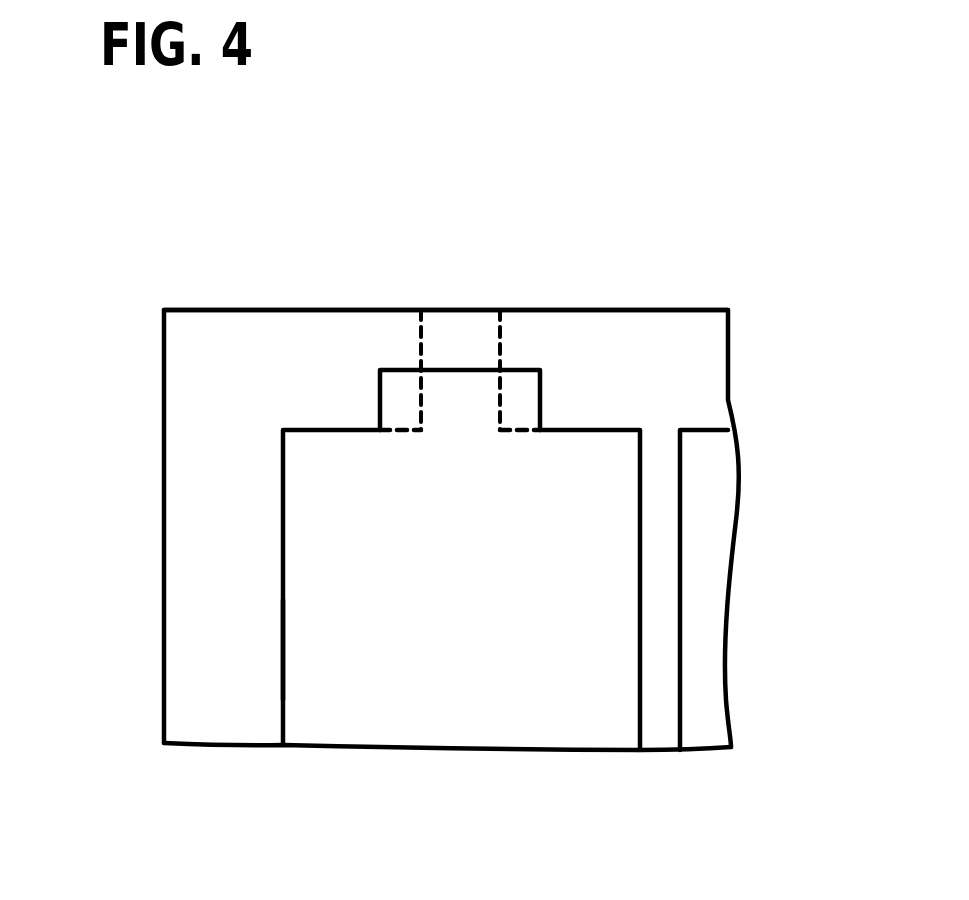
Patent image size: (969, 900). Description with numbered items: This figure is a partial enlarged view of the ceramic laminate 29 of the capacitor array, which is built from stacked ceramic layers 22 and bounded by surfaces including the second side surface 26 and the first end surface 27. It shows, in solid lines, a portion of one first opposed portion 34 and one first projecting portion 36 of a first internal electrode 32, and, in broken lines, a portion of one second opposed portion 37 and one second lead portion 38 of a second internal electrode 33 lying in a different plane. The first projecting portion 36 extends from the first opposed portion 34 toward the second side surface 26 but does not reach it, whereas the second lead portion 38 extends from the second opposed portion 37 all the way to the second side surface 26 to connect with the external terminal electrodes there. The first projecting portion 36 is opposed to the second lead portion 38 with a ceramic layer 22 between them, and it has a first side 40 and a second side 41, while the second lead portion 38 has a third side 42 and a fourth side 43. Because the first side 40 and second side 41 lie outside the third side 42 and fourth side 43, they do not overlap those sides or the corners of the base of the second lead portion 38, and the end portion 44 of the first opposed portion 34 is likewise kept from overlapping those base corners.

The ceramic layer 22 is at (708, 348).
The second side surface 26 is at (708, 310).
The first end surface 27 is at (164, 735).
The ceramic laminate 29 is at (213, 745).
The first internal electrode 32 is at (283, 633).
The second internal electrode 33 is at (283, 683).
The first opposed portion 34 is at (323, 535).
The first projecting portion 36 is at (467, 380).
The second opposed portion 37 is at (320, 595).
The second lead portion 38 is at (437, 330).
The first side 40 is at (379, 398).
The second side 41 is at (540, 398).
The third side 42 is at (420, 350).
The fourth side 43 is at (503, 347).
The end portion 44 is at (337, 430).